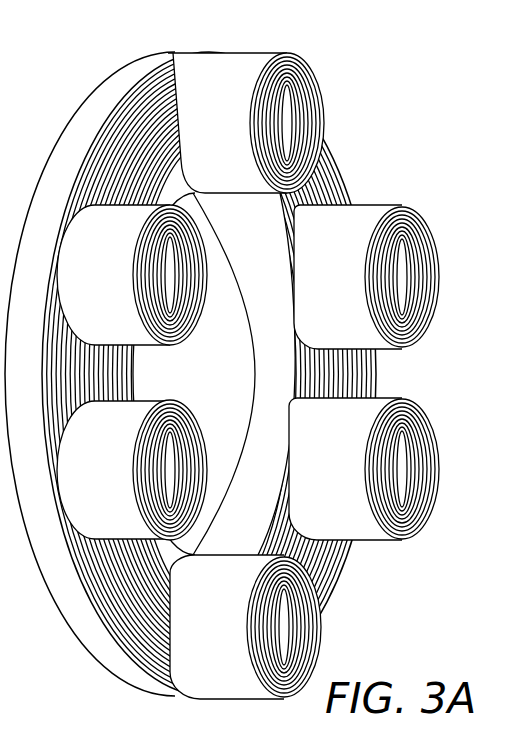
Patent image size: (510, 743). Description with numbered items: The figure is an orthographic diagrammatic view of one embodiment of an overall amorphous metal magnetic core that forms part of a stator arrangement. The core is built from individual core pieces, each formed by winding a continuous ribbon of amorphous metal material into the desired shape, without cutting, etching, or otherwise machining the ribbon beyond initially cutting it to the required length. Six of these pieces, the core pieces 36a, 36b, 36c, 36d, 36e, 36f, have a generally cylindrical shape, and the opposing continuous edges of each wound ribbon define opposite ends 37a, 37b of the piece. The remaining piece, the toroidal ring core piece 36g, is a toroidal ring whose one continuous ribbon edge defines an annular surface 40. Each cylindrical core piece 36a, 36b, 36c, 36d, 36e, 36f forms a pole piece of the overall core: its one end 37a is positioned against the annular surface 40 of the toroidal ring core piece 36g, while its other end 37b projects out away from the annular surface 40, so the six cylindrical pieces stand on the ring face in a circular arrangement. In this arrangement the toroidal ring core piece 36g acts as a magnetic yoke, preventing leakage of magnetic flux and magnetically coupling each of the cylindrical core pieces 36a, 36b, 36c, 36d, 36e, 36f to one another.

The annular surface 40 is at (129, 142).
The end of core piece 37a is at (173, 80).
The end of core piece 37b is at (312, 112).
The core piece 36a is at (305, 123).
The core piece 36b is at (348, 298).
The core piece 36c is at (346, 483).
The core piece 36d is at (222, 643).
The core piece 36e is at (112, 485).
The core piece 36f is at (110, 283).
The toroidal ring core piece 36g is at (320, 186).